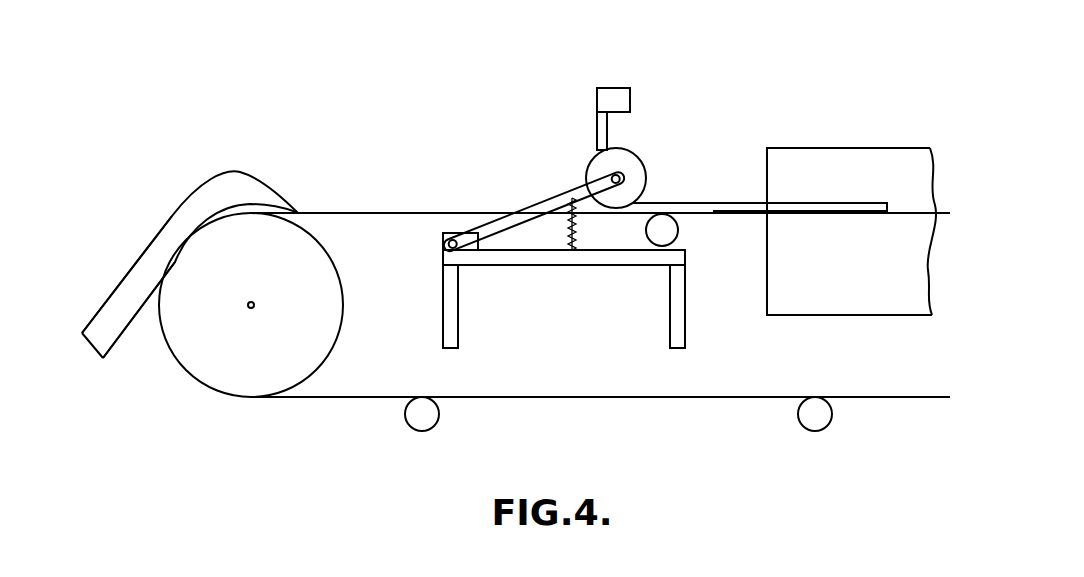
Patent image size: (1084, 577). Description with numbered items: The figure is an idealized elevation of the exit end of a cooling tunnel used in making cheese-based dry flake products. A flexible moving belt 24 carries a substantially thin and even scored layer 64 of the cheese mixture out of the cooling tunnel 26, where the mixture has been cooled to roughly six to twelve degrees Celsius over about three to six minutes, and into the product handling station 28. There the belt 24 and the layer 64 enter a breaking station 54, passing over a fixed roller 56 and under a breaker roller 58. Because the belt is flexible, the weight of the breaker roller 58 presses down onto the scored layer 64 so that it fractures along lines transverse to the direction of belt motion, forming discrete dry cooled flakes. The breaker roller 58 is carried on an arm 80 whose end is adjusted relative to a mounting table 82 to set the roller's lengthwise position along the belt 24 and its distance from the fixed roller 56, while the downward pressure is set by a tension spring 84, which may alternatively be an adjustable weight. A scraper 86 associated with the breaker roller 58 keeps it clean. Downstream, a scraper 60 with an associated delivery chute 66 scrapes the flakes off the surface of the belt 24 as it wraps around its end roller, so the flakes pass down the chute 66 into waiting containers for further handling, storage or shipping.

The moving belt 24 is at (713, 212).
The cooling tunnel 26 is at (813, 158).
The product handling station 28 is at (250, 134).
The breaking station 54 is at (645, 130).
The fixed roller 56 is at (673, 232).
The breaker roller 58 is at (637, 168).
The scraper 60 is at (248, 192).
The layer 64 is at (837, 203).
The delivery chute 66 is at (130, 283).
The arm 80 is at (490, 222).
The mounting table 82 is at (528, 260).
The tension spring 84 is at (578, 232).
The scraper 86 is at (597, 125).